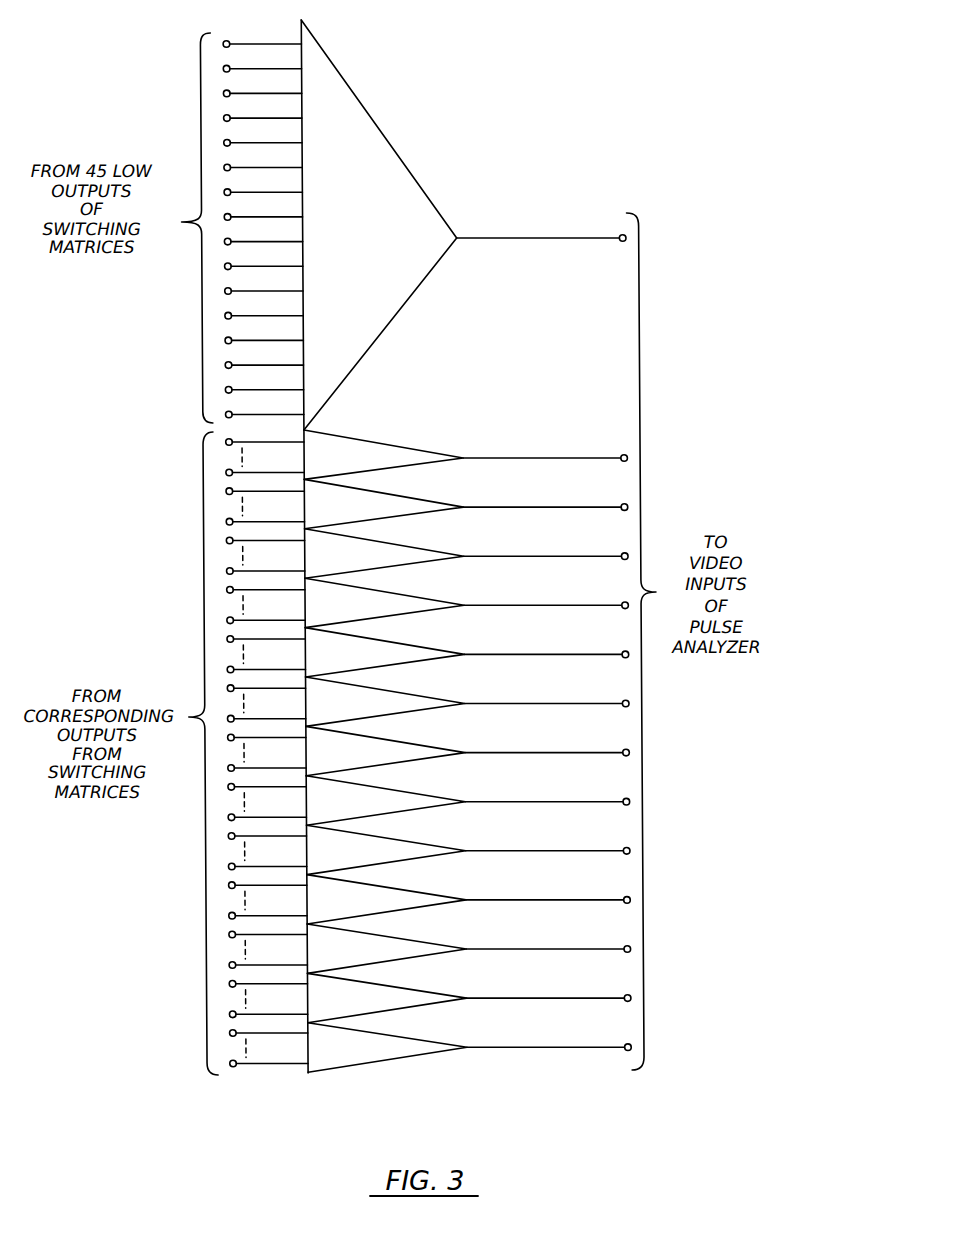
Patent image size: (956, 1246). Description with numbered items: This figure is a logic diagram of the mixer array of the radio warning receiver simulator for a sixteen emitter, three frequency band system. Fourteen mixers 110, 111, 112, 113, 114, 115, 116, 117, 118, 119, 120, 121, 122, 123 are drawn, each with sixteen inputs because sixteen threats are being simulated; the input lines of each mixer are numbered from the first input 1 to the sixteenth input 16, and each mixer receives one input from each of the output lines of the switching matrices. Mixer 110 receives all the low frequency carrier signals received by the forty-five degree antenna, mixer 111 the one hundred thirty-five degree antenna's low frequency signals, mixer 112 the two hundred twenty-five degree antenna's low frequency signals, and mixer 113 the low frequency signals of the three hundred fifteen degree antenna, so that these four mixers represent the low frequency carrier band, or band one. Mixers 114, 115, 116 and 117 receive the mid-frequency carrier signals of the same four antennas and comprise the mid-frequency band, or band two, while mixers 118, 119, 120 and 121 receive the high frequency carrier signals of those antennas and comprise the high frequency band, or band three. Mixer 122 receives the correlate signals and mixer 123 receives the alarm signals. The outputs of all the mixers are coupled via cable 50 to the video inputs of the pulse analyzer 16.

The first input line of switching matrix output group 1 is at (265, 530).
The pulse analyzer 16 is at (266, 731).
The cable 50 is at (527, 240).
The mixer 110 is at (413, 176).
The mixer 111 is at (412, 448).
The mixer 112 is at (412, 497).
The mixer 113 is at (412, 546).
The mixer 114 is at (412, 595).
The mixer 115 is at (412, 644).
The mixer 116 is at (412, 694).
The mixer 117 is at (412, 743).
The mixer 118 is at (412, 792).
The mixer 119 is at (412, 841).
The mixer 120 is at (412, 890).
The mixer 121 is at (412, 939).
The mixer 122 is at (412, 988).
The mixer 123 is at (412, 1037).